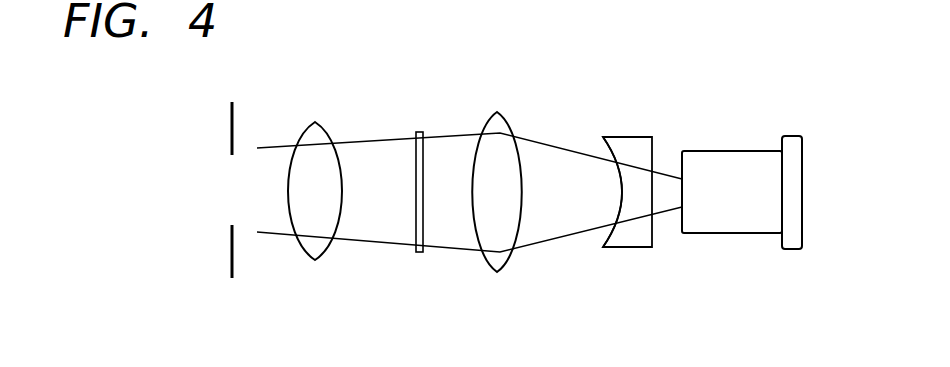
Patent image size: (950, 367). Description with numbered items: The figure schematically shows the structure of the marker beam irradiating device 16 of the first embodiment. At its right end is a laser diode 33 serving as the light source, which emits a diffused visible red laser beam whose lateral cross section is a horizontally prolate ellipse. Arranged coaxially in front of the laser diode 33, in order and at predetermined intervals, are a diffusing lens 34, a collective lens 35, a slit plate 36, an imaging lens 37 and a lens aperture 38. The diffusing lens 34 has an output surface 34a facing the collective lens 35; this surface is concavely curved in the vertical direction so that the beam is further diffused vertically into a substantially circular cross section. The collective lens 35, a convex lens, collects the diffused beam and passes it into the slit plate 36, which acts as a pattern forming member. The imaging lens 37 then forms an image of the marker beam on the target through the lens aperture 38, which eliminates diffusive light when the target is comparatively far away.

The marker beam irradiating device 16 is at (552, 86).
The laser diode 33 is at (742, 233).
The diffusing lens 34 is at (628, 249).
The output surface 34a is at (611, 228).
The collective lens 35 is at (497, 274).
The slit plate 36 is at (420, 131).
The imaging lens 37 is at (313, 122).
The lens aperture 38 is at (234, 262).